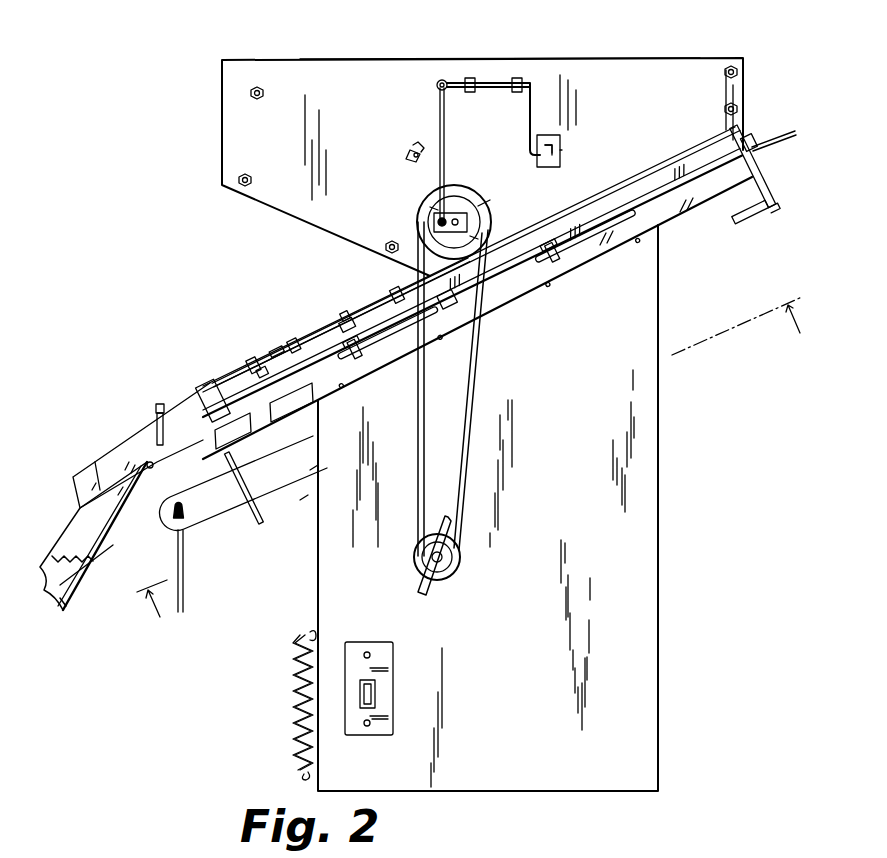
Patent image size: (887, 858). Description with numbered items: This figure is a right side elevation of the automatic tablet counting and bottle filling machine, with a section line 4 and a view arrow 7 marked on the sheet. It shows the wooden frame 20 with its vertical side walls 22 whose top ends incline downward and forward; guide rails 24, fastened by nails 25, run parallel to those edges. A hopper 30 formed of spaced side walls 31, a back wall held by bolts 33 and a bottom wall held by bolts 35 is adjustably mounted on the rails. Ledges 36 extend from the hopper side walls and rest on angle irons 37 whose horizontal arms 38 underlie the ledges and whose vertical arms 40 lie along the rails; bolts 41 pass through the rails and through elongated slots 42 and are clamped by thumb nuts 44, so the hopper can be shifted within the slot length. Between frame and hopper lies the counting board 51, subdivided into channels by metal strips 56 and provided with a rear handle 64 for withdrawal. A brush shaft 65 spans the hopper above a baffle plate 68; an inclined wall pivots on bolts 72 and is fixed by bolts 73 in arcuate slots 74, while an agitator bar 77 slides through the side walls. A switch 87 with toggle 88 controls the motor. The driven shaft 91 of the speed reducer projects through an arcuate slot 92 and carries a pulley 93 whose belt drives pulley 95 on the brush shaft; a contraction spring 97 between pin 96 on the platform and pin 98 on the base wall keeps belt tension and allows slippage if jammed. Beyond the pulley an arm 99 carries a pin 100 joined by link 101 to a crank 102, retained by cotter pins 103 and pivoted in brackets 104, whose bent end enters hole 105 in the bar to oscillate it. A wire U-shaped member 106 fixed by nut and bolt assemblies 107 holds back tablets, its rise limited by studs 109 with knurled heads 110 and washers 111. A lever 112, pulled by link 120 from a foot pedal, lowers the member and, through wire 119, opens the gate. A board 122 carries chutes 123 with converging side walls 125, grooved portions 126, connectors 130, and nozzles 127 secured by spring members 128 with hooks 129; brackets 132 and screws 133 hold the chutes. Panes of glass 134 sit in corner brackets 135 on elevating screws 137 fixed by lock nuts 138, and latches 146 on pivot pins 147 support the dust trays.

The section line 4- 4 is at (469, 450).
The view direction 7 is at (350, 286).
The frame 20 is at (676, 525).
The side walls 22 is at (660, 470).
The guide rails 24 is at (706, 206).
The nails 25 is at (640, 250).
The hopper 30 is at (286, 51).
The side walls 31 is at (362, 64).
The bolts 33 is at (724, 106).
The bolts 35 is at (389, 242).
The ledges 36 is at (600, 195).
The angle irons 37 is at (514, 308).
The horizontal arms 38 is at (640, 196).
The vertical arms 40 is at (680, 220).
The bolts 41 is at (552, 258).
The elongated slots 42 is at (585, 240).
The thumb nuts 44 is at (561, 262).
The counting board 51 is at (776, 149).
The metal strips 56 is at (747, 134).
The handle 64 is at (790, 128).
The shaft 65 is at (483, 207).
The baffle plate 68 is at (453, 299).
The bolts 72 is at (263, 93).
The bolts 73 is at (408, 158).
The elongated slots 74 is at (418, 148).
The bar 77 is at (562, 160).
The switch 87 is at (390, 655).
The operating toggle 88 is at (377, 693).
The driven shaft 91 is at (430, 560).
The elongated arcuate slot 92 is at (445, 520).
The pulley 93 is at (455, 572).
The pulley 95 is at (470, 195).
The pin 96 is at (308, 633).
The contraction spring 97 is at (292, 680).
The pin 98 is at (305, 775).
The arm 99 is at (462, 222).
The pin 100 is at (438, 220).
The link 101 is at (445, 150).
The crank 102 is at (442, 80).
The cotter pins 103 is at (448, 82).
The brackets 104 is at (515, 78).
The hole 105 is at (557, 143).
The U-shaped member 106 is at (285, 350).
The nut and bolt assemblies 107 is at (238, 372).
The studs 109 is at (298, 358).
The knurled heads 110 is at (325, 312).
The washers 111 is at (322, 318).
The lever 112 is at (218, 512).
The wire 119 is at (264, 506).
The link 120 is at (186, 566).
The board 122 is at (150, 475).
The chutes 123 is at (82, 435).
The side walls 125 is at (120, 456).
The grooved portion 126 is at (74, 523).
The nozzles 127 is at (85, 595).
The spring members 128 is at (98, 562).
The hooks 129 is at (56, 556).
The connector 130 is at (70, 470).
The brackets 132 is at (160, 404).
The screws 133 is at (156, 436).
The panes of glass 134 is at (360, 292).
The corner brackets 135 is at (342, 318).
The elevating screws 137 is at (215, 426).
The lock nuts 138 is at (205, 376).
The latches 146 is at (757, 218).
The pivot pins 147 is at (777, 197).